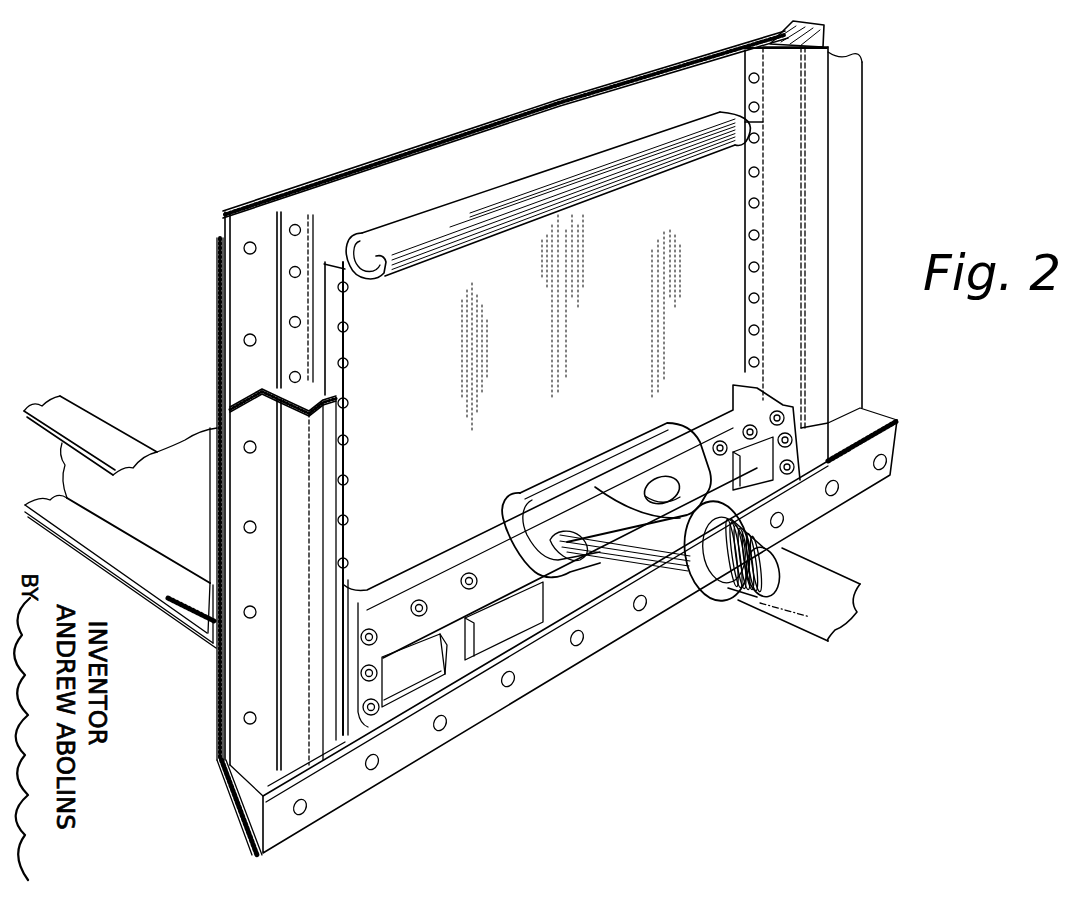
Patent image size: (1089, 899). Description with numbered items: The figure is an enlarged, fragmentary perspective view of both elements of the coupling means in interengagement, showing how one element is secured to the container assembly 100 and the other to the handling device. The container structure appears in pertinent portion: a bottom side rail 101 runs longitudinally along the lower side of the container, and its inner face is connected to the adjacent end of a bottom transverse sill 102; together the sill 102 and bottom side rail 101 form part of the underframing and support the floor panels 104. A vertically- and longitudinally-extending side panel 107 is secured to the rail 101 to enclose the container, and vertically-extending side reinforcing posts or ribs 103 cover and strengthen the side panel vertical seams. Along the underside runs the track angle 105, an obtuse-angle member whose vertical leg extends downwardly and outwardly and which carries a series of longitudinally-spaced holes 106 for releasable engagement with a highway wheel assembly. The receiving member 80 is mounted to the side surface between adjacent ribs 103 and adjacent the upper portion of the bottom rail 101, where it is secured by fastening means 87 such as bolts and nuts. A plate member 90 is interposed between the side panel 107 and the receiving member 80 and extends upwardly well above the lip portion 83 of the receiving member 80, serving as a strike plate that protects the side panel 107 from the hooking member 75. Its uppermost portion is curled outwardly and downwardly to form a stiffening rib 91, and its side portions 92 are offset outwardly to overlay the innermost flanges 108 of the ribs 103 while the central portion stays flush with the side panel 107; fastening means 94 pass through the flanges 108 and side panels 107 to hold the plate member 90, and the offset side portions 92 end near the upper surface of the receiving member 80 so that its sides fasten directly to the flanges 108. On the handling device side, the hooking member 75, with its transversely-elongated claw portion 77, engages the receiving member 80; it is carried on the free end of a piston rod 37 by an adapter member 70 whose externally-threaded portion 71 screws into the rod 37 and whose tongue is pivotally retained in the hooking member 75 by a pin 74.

The piston rod 37 is at (860, 605).
The adapter member 70 is at (692, 600).
The externally-threaded portion 71 is at (767, 573).
The pin 74 is at (650, 482).
The hooking member 75 is at (575, 488).
The claw portion 77 is at (510, 528).
The receiving member 80 is at (733, 413).
The lip portion 83 is at (450, 565).
The fastening means 87 is at (795, 480).
The plate member 90 is at (490, 268).
The stiffening rib 91 is at (657, 162).
The side portions 92 is at (749, 254).
The fastening means 94 is at (748, 326).
The container assembly 100 is at (252, 206).
The bottom side rail 101 is at (897, 418).
The bottom transverse sill 102 is at (55, 400).
The side reinforcing post or rib 103 is at (765, 32).
The floor panel 104 is at (182, 457).
The track angle 105 is at (233, 812).
The holes 106 is at (383, 763).
The side panel 107 is at (518, 128).
The innermost flange 108 is at (745, 93).